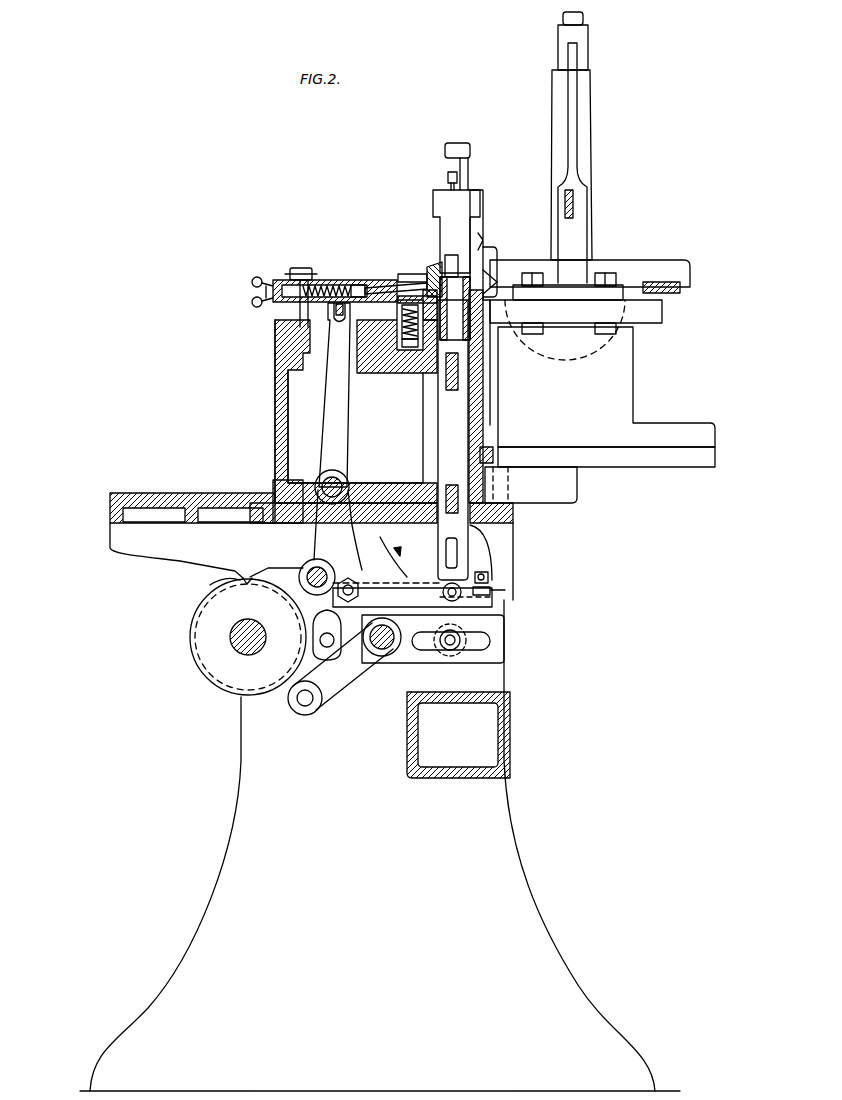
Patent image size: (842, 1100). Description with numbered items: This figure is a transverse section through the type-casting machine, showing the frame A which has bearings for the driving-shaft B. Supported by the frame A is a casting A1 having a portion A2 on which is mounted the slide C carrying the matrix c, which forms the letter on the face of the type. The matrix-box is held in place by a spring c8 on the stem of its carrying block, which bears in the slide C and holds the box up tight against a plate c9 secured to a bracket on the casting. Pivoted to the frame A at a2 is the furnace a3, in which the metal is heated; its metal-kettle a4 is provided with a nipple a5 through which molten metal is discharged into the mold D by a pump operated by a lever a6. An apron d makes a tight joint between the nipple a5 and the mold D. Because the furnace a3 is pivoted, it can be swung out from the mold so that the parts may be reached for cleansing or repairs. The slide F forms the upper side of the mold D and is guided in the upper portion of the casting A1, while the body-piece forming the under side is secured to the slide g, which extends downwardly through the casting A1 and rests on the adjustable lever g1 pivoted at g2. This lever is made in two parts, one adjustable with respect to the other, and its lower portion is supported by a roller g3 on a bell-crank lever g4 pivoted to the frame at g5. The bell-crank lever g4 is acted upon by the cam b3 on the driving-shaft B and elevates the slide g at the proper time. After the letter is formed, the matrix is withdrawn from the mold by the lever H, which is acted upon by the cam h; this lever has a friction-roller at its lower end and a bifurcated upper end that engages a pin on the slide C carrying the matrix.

The frame A is at (518, 523).
The casting A1 is at (484, 403).
The portion of casting A2 is at (343, 396).
The shaft B is at (248, 636).
The cam b3 is at (248, 637).
The slide C is at (324, 295).
The matrix c is at (427, 282).
The plate c9 is at (432, 268).
The spring c8 is at (420, 331).
The mold D is at (455, 308).
The apron d is at (490, 252).
The slide F is at (458, 221).
The lever H is at (338, 436).
The cam h is at (247, 584).
The slide g is at (453, 440).
The adjustable lever g1 is at (490, 598).
The pivot g2 is at (311, 573).
The roller g3 is at (433, 639).
The bell-crank lever g4 is at (340, 669).
The pivot g5 is at (382, 649).
The pivot a2 is at (496, 487).
The furnace a3 is at (597, 383).
The metal-kettle a4 is at (590, 297).
The nipple a5 is at (497, 282).
The lever a6 is at (573, 208).